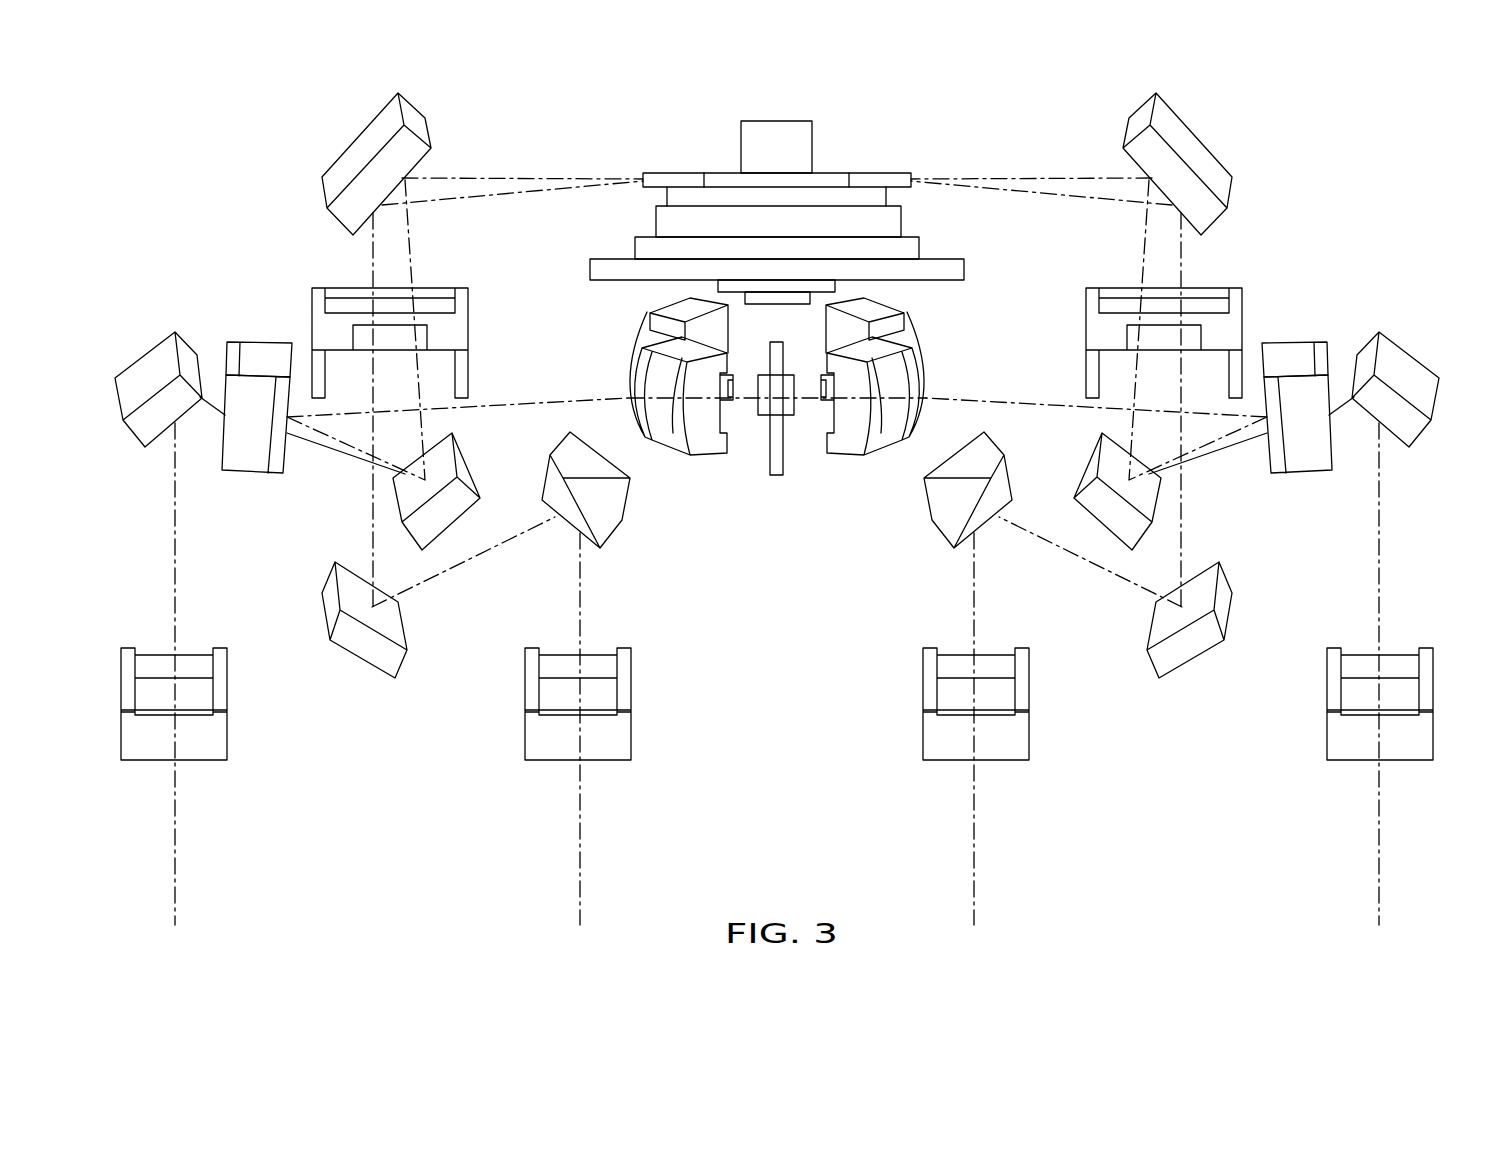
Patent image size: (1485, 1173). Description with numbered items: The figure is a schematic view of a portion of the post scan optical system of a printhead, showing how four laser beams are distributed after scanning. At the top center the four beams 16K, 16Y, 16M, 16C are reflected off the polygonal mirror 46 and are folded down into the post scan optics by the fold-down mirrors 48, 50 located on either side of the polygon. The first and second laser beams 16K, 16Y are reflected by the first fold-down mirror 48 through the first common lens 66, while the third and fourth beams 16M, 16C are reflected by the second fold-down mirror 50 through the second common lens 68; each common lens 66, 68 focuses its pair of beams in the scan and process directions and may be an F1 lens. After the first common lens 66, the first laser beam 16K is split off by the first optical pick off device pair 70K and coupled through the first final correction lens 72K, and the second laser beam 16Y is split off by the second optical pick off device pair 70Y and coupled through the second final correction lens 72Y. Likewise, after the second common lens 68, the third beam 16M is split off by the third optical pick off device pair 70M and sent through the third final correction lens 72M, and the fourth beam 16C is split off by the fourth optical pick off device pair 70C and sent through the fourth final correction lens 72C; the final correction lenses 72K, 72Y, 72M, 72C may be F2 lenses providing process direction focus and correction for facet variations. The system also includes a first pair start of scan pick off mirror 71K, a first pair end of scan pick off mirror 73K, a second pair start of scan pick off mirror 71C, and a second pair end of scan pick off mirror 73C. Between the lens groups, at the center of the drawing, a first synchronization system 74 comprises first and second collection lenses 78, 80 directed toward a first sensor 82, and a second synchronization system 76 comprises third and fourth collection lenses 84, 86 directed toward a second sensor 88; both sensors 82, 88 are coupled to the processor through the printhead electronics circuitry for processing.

The first laser beam 16K is at (500, 178).
The second laser beam 16Y is at (485, 194).
The third laser beam 16M is at (1053, 181).
The fourth laser beam 16C is at (1065, 196).
The polygonal mirror 46 is at (877, 173).
The first fold-down mirror 48 is at (358, 150).
The second fold-down mirror 50 is at (1197, 148).
The first common lens 66 is at (468, 330).
The second common lens 68 is at (1087, 330).
The first optical pick off device pair 70K is at (150, 362).
The second optical pick off device pair 70Y is at (330, 604).
The third optical pick off device pair 70M is at (1222, 608).
The fourth optical pick off device pair 70C is at (1408, 368).
The first pair start of scan pick off mirror 71K is at (265, 355).
The second pair start of scan pick off mirror 71C is at (1307, 467).
The first pair end of scan pick off mirror 73K is at (248, 462).
The second pair end of scan pick off mirror 73C is at (1290, 357).
The first final correction lens 72K is at (227, 727).
The second final correction lens 72Y is at (523, 733).
The third final correction lens 72M is at (1028, 733).
The fourth final correction lens 72C is at (1328, 732).
The first synchronization system 74 is at (691, 516).
The second synchronization system 76 is at (853, 516).
The first collection lens 78 is at (650, 382).
The second collection lens 80 is at (650, 328).
The first sensor 82 is at (757, 415).
The third collection lens 84 is at (903, 330).
The fourth collection lens 86 is at (903, 382).
The second sensor 88 is at (793, 415).